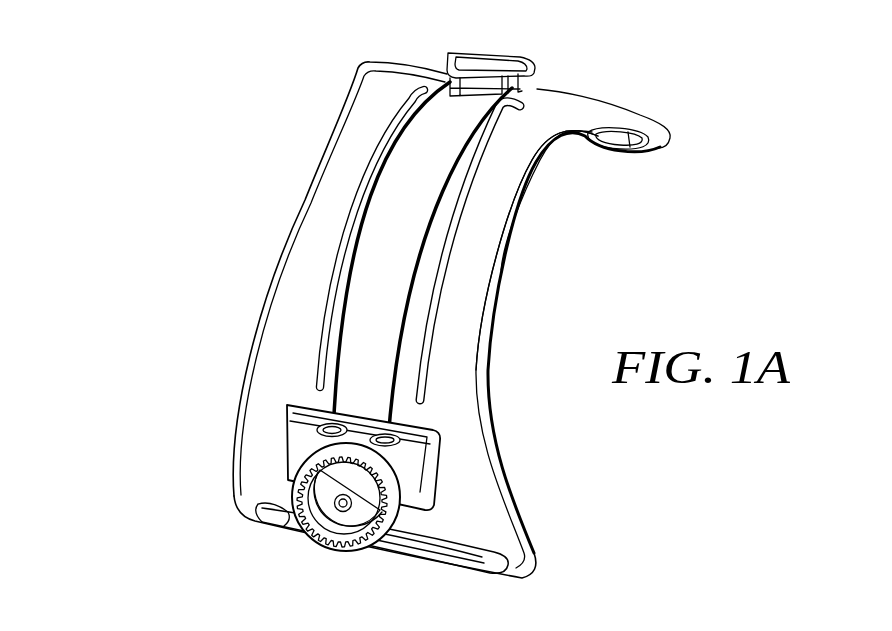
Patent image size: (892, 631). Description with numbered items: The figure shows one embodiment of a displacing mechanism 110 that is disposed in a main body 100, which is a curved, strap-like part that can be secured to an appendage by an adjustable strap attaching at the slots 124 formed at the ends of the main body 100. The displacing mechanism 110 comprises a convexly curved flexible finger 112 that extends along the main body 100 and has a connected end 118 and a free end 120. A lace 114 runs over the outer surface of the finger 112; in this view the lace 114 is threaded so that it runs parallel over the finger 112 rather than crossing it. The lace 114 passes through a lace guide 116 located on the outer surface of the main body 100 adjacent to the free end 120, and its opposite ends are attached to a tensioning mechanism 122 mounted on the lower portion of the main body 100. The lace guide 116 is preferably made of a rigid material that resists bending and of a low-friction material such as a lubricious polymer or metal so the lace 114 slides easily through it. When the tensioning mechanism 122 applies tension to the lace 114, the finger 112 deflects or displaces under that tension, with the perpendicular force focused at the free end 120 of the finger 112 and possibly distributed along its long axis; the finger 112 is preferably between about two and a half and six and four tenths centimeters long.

The main body 100 is at (476, 489).
The displacing mechanism 110 is at (146, 188).
The convexly curved flexible finger 112 is at (447, 212).
The lace 114 is at (365, 228).
The lace guide 116 is at (515, 48).
The connected end 118 is at (407, 381).
The free end 120 is at (413, 112).
The tensioning mechanism 122 is at (323, 502).
The slots 124 is at (620, 137).